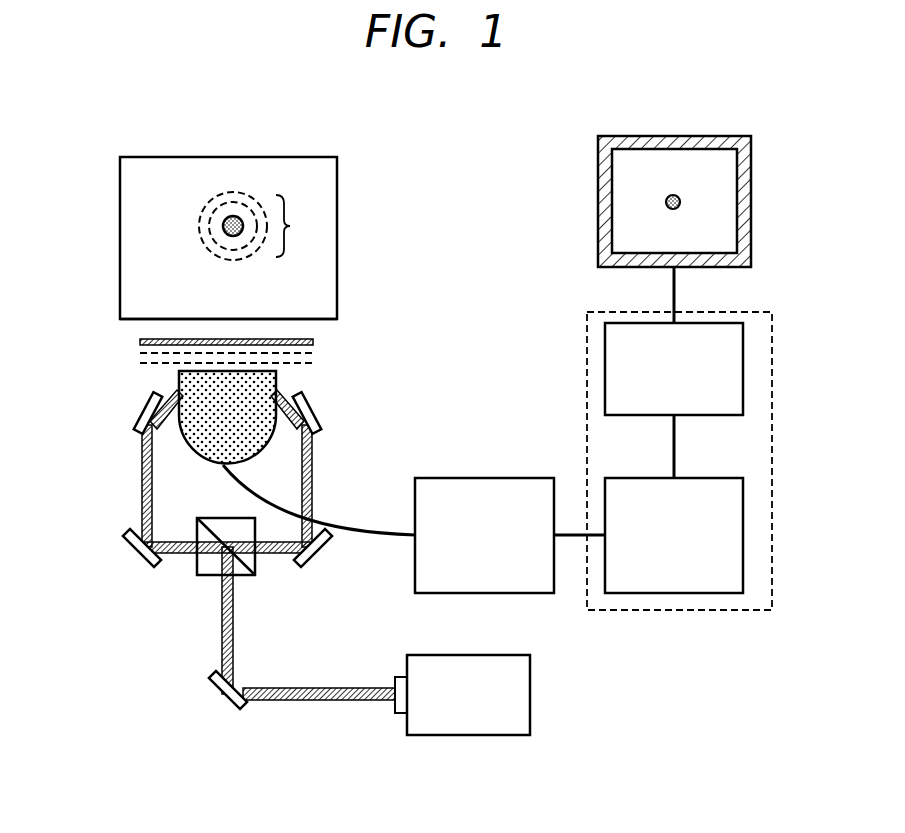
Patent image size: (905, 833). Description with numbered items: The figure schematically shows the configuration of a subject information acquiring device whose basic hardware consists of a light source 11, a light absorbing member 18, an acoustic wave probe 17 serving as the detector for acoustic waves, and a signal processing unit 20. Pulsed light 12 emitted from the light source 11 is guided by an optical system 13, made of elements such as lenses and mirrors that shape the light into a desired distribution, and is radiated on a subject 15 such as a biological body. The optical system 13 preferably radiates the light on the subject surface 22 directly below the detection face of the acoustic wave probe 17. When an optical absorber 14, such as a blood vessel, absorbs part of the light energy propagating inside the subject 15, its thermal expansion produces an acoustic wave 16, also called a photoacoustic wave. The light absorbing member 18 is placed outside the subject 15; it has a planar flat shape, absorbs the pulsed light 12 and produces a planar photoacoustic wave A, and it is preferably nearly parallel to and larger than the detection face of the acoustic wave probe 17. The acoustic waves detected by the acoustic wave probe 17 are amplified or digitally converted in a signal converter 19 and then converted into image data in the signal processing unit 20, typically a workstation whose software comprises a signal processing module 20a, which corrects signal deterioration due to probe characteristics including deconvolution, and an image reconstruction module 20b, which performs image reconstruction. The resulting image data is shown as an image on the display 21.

The light source 11 is at (478, 736).
The pulsed light 12 is at (312, 703).
The optical system 13 is at (147, 547).
The optical absorber 14 is at (236, 216).
The subject 15 is at (129, 212).
The acoustic wave 16 is at (259, 226).
The acoustic wave probe 17 is at (190, 437).
The light absorbing member 18 is at (314, 342).
The signal converter 19 is at (497, 478).
The signal processing unit 20 is at (740, 450).
The signal processing module 20a is at (676, 593).
The image reconstruction module 20b is at (743, 357).
The display 21 is at (694, 136).
The subject surface 22 is at (168, 318).
The planar photoacoustic wave A is at (213, 357).